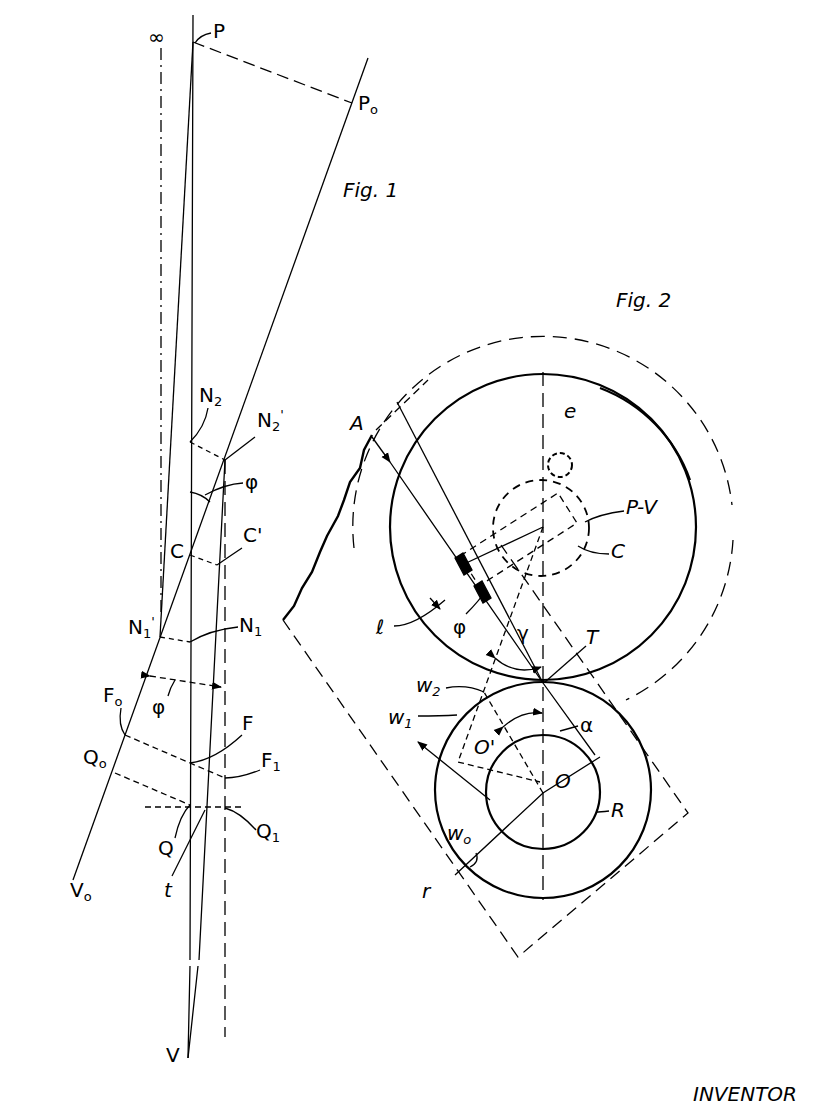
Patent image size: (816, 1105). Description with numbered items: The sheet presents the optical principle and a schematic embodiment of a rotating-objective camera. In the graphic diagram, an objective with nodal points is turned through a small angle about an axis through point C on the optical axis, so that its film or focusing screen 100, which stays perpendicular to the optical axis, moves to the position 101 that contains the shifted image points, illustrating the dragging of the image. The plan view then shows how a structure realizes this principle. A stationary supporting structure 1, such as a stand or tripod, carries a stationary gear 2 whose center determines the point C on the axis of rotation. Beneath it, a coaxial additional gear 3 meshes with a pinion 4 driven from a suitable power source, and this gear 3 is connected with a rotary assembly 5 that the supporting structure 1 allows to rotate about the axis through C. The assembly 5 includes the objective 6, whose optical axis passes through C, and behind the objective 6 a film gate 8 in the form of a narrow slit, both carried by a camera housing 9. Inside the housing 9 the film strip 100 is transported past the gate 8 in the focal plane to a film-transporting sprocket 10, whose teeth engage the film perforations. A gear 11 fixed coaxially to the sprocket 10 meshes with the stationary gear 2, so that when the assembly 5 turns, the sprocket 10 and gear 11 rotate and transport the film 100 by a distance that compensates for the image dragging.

In FIG. 2, the stationary supporting structure 1 is at (527, 372).
In FIG. 2, the stationary gear 2 is at (614, 396).
In FIG. 2, the additional gear 3 is at (580, 505).
In FIG. 2, the pinion 4 is at (573, 462).
In FIG. 2, the rotary assembly 5 is at (505, 334).
In FIG. 2, the objective 6 is at (478, 556).
In FIG. 2, the film gate 8 is at (455, 566).
In FIG. 2, the camera housing 9 is at (398, 400).
In FIG. 2, the film-transporting sprocket 10 is at (580, 762).
In FIG. 2, the gear 11 is at (640, 735).
In FIG. 1, the film strip 100 is at (242, 807).
In FIG. 2, the film strip 100 is at (494, 543).
In FIG. 1, the position of the image plane 101 is at (142, 783).